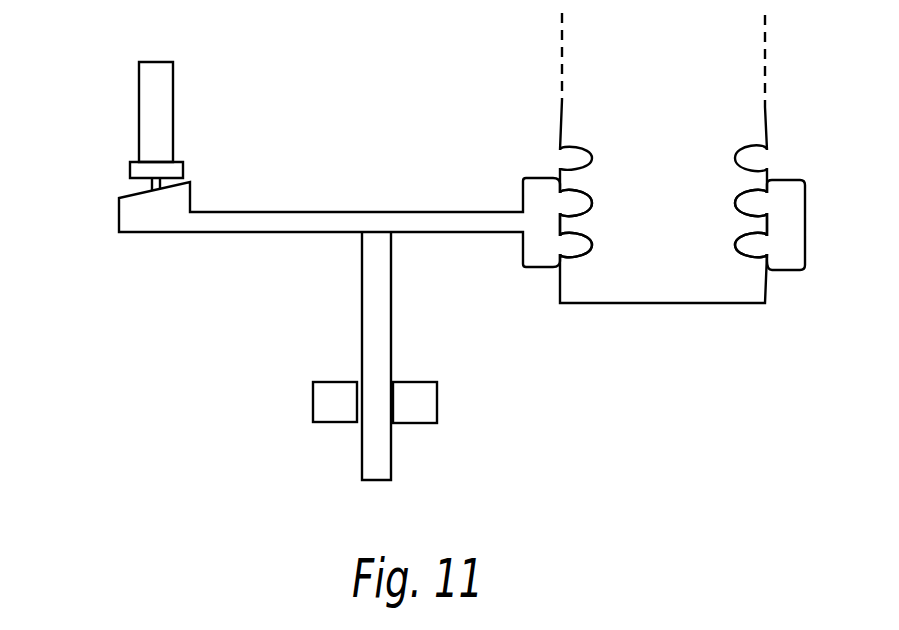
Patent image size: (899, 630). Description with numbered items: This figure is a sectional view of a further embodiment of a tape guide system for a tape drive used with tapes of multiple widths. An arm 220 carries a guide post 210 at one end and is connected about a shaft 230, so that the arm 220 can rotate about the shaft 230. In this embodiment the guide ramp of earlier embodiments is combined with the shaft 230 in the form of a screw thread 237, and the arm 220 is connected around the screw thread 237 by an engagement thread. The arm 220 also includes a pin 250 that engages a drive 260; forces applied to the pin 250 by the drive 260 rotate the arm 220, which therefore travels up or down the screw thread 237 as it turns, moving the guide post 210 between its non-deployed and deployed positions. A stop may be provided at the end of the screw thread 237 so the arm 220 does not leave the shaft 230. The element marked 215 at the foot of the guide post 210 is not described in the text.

The guide post 210 is at (160, 90).
The pin base 215 is at (128, 169).
The arm 220 is at (320, 220).
The shaft 230 is at (745, 75).
The screw thread 237 is at (745, 181).
The pin 250 is at (372, 448).
The drive 260 is at (425, 402).